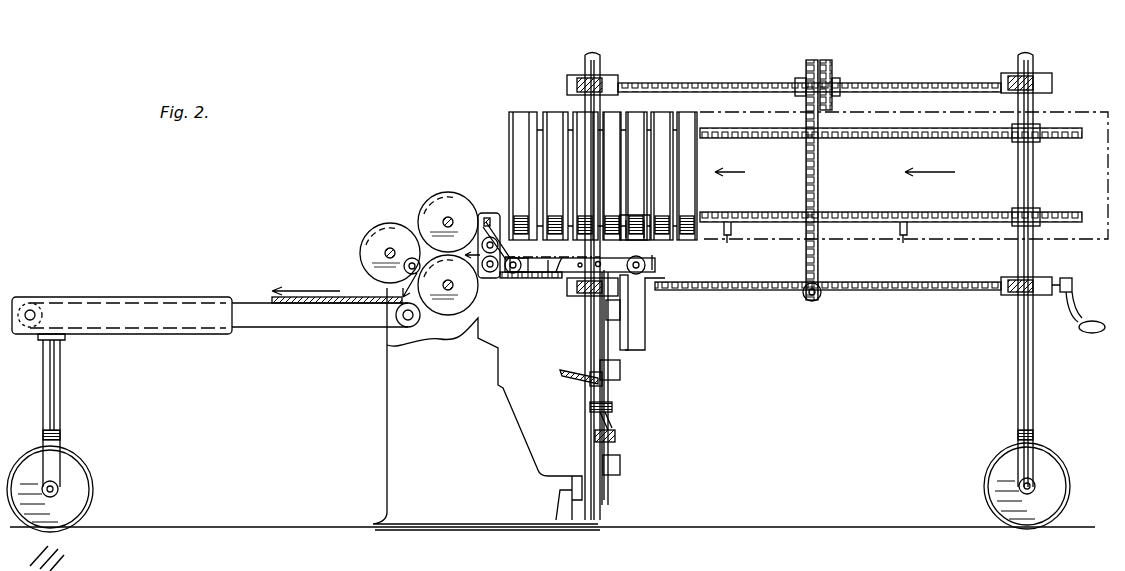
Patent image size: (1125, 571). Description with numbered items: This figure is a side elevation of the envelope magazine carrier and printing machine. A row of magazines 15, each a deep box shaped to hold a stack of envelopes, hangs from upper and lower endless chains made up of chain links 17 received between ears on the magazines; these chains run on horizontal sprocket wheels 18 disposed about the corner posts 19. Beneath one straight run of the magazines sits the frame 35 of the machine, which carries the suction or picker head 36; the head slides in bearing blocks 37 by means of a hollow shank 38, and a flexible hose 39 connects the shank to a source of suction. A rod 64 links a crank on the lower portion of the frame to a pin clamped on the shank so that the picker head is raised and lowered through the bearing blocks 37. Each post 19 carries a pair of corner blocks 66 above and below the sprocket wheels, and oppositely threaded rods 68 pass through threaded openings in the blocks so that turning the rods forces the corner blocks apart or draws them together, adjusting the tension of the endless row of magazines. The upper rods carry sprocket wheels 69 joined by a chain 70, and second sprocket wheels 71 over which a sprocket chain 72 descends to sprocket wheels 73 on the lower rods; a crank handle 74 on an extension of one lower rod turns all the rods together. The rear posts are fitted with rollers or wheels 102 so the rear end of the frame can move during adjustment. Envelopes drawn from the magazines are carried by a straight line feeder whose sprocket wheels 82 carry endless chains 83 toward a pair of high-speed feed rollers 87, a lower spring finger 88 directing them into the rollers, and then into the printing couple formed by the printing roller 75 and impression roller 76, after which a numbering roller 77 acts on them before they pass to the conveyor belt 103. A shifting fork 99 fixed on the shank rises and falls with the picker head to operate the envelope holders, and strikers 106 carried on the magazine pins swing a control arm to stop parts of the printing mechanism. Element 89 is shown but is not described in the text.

The magazine 15 is at (665, 162).
The chain link 17 is at (875, 210).
The sprocket wheel 18 is at (1040, 210).
The post 19 is at (596, 60).
The frame 35 is at (610, 392).
The suction or picker head 36 is at (645, 258).
The bearing block 37 is at (620, 312).
The hollow shank 38 is at (620, 368).
The flexible hose 39 is at (566, 375).
The rod 64 is at (592, 425).
The corner block 66 is at (615, 80).
The threaded rod 68 is at (905, 84).
The sprocket wheel 69 is at (840, 92).
The chain 70 is at (832, 65).
The second sprocket wheel 71 is at (797, 80).
The sprocket chain 72 is at (818, 175).
The sprocket wheel 73 is at (818, 298).
The crank handle 74 is at (1076, 315).
The printing roller 75 is at (445, 188).
The impression roller 76 is at (448, 318).
The numbering roller 77 is at (375, 228).
The sprocket wheel 82 is at (645, 270).
The endless chain 83 is at (552, 285).
The feed roller 87 is at (488, 237).
The lower spring finger 88 is at (528, 278).
The pawl bracket 89 is at (500, 208).
The shifting fork 99 is at (650, 318).
The roller or wheel 102 is at (1050, 455).
The conveyor belt 103 is at (250, 295).
The striker 106 is at (729, 240).